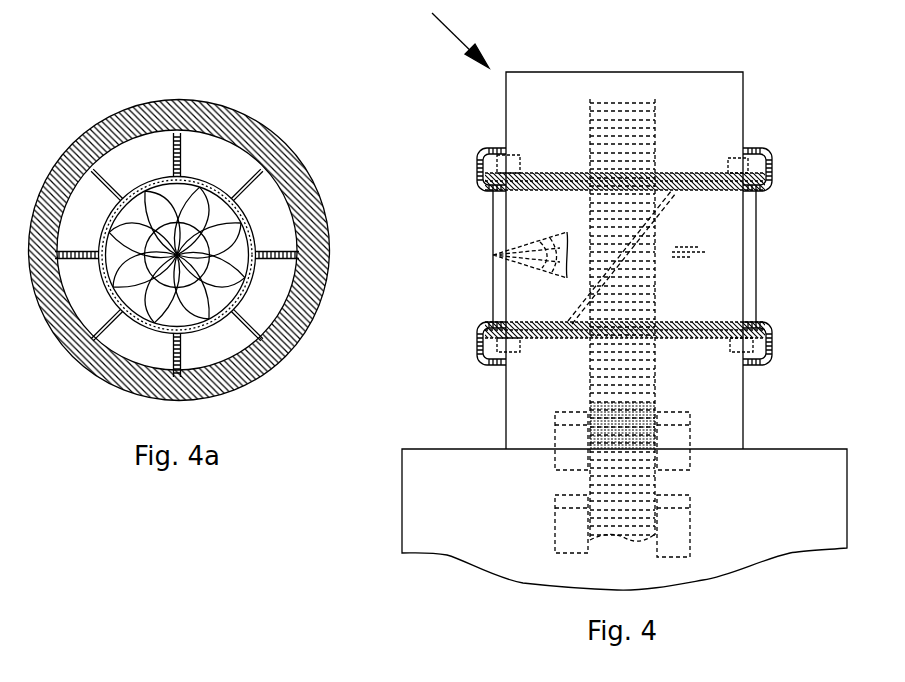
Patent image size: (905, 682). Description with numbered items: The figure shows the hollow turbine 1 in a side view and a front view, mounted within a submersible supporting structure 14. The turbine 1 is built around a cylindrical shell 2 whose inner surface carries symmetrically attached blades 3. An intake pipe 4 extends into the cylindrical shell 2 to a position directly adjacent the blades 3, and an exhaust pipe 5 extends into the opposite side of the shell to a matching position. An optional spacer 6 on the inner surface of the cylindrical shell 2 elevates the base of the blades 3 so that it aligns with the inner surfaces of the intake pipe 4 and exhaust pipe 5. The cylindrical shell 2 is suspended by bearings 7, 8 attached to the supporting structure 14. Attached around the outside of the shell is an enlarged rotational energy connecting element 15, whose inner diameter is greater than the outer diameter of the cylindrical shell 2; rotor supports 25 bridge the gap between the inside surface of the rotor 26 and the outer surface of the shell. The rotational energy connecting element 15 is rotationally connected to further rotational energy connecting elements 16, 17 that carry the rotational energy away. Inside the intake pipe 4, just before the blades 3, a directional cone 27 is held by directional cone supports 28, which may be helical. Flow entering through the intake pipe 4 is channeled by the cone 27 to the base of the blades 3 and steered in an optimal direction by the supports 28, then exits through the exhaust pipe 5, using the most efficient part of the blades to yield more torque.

In FIG. 4, the turbine 1 is at (450, 34).
In FIG. 4A, the cylindrical shell 2 is at (248, 228).
In FIG. 4, the cylindrical shell 2 is at (706, 174).
In FIG. 4A, the blades 3 is at (126, 249).
In FIG. 4, the blades 3 is at (662, 212).
In FIG. 4A, the intake pipe 4 is at (251, 257).
In FIG. 4, the intake pipe 4 is at (513, 323).
In FIG. 4, the exhaust pipe 5 is at (725, 191).
In FIG. 4, the spacer 6 is at (586, 191).
In FIG. 4, the bearing 7 is at (520, 170).
In FIG. 4, the bearing 8 is at (730, 346).
In FIG. 4, the submersible supporting structure 14 is at (745, 396).
In FIG. 4A, the rotational energy connecting element 15 is at (168, 126).
In FIG. 4, the rotational energy connecting element 15 is at (612, 231).
In FIG. 4, the rotational energy connecting element 16 is at (612, 438).
In FIG. 4, the rotational energy connecting element 17 is at (612, 504).
In FIG. 4A, the rotor support 25 is at (175, 170).
In FIG. 4A, the inside surface of the rotor 26 is at (229, 136).
In FIG. 4A, the directional cone 27 is at (199, 242).
In FIG. 4, the directional cone 27 is at (562, 273).
In FIG. 4A, the directional cone supports 28 is at (177, 303).
In FIG. 4, the directional cone supports 28 is at (530, 247).